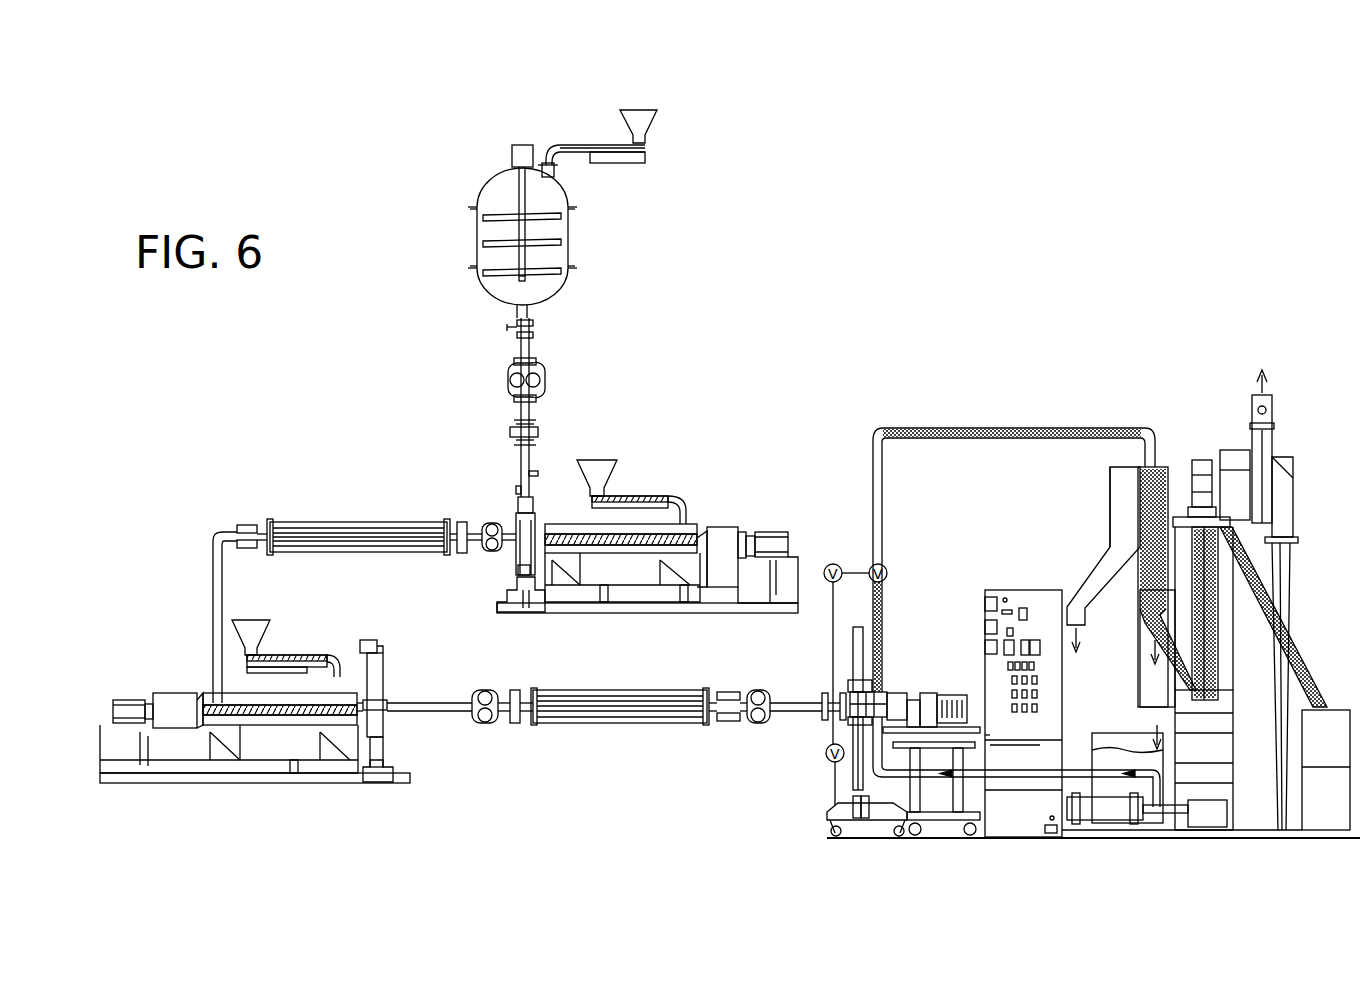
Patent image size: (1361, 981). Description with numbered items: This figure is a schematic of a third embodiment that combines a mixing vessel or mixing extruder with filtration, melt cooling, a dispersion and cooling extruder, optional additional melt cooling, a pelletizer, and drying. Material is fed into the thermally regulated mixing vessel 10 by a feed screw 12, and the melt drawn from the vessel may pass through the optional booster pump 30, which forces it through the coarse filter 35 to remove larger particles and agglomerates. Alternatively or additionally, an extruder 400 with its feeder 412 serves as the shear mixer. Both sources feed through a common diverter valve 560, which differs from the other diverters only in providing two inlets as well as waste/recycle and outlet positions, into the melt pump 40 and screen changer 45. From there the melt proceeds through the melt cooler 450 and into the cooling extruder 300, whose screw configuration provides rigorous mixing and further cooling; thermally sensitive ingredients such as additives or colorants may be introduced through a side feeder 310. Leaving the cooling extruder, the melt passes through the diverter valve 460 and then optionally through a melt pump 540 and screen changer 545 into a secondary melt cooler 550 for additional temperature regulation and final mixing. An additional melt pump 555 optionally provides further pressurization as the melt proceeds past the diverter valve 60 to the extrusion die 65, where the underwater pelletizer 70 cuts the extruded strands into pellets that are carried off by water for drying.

The mixing vessel 10 is at (478, 195).
The feed screw 12 is at (637, 118).
The booster pump 30 is at (506, 378).
The coarse filter 35 is at (509, 432).
The melt pump 40 is at (490, 523).
The screen changer 45 is at (460, 524).
The diverter valve 60 is at (832, 797).
The extrusion die 65 is at (866, 680).
The underwater pelletizer 70 is at (952, 695).
The cooling extruder 300 is at (177, 703).
The side feeder 310 is at (252, 652).
The extruder 400 is at (718, 527).
The feeder 412 is at (592, 476).
The melt cooler 450 is at (348, 532).
The diverter valve 460 is at (386, 759).
The melt pump 540 is at (485, 690).
The screen changer 545 is at (515, 690).
The secondary melt cooler 550 is at (627, 703).
The melt pump 555 is at (757, 690).
The diverter valve 560 is at (520, 597).